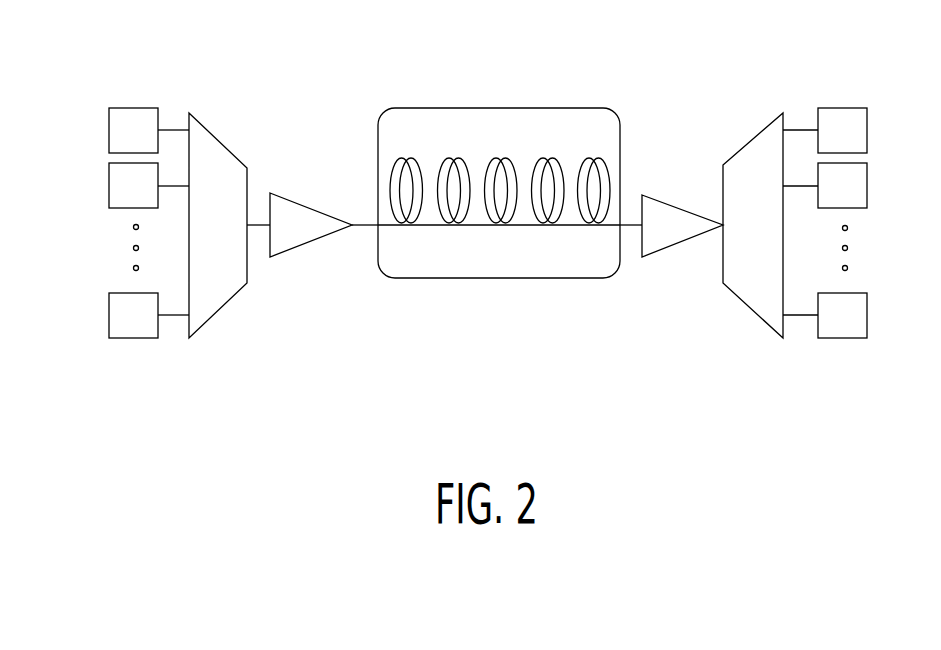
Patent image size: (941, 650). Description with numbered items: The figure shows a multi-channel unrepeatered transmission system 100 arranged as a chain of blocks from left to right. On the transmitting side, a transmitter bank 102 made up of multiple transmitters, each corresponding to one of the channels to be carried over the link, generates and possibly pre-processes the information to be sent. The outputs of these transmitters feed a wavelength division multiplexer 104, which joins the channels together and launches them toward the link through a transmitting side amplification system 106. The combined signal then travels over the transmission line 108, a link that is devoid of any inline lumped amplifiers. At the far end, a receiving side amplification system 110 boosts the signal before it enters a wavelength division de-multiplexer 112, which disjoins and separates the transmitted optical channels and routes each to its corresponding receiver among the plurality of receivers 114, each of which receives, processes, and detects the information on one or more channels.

The system 100 is at (485, 104).
The transmitter bank 102 is at (109, 187).
The multiplexer 104 is at (225, 305).
The transmitting side amplification system 106 is at (315, 243).
The transmission line 108 is at (407, 228).
The receiving side amplification system 110 is at (682, 243).
The de-multiplexer 112 is at (753, 313).
The plurality of receivers 114 is at (867, 188).